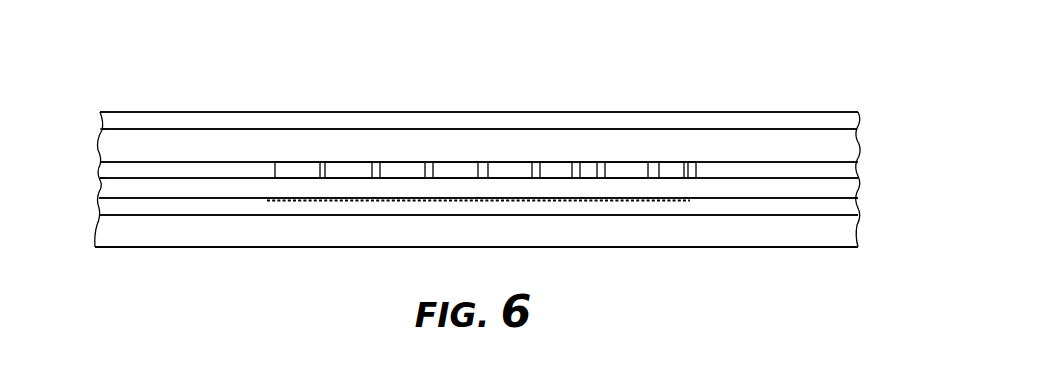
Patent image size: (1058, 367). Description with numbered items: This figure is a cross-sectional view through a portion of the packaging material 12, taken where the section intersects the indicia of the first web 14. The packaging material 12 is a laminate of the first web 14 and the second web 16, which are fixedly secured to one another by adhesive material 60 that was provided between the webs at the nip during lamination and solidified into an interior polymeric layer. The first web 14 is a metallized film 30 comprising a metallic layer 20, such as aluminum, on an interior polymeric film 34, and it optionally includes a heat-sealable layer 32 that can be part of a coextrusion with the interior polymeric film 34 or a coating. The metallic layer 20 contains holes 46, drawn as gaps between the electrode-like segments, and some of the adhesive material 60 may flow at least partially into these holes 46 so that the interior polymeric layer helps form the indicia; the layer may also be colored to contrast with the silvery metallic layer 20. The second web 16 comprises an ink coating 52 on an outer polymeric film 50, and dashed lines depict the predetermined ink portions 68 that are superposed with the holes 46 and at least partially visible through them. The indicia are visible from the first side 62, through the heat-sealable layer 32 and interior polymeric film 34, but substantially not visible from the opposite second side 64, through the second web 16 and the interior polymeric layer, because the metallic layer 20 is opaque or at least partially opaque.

The packaging material 12 is at (120, 66).
The first web 14 is at (507, 107).
The second web 16 is at (282, 263).
The metallic layer 20 is at (508, 126).
The metallized film 30 is at (77, 135).
The heat-sealable layer 32 is at (277, 124).
The interior polymeric film 34 is at (845, 143).
The holes 46 is at (600, 167).
The outer polymeric film 50 is at (697, 238).
The ink coating 52 is at (843, 203).
The adhesive material 60 is at (99, 188).
The first side 62 is at (778, 54).
The second side 64 is at (776, 295).
The predetermined ink portions 68 is at (587, 201).